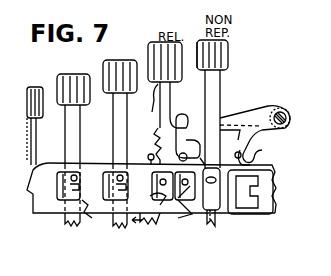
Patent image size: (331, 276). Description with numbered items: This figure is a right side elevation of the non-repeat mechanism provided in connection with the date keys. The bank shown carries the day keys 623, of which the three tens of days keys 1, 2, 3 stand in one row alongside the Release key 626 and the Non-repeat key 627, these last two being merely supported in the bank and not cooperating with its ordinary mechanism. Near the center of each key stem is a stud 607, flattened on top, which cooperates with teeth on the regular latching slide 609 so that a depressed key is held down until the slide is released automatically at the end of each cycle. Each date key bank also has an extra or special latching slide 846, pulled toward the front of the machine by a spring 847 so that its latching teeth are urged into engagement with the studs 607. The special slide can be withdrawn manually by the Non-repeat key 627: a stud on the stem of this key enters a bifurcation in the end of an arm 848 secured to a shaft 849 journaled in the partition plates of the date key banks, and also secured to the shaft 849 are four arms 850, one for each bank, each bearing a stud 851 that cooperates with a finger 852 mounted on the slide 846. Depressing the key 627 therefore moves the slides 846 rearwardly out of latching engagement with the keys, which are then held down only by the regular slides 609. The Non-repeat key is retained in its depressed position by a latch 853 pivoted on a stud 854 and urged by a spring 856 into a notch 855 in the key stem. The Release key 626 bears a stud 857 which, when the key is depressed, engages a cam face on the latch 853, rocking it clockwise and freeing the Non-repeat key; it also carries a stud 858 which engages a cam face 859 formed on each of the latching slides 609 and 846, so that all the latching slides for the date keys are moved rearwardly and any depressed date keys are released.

The key 1 is at (33, 117).
The key 2 is at (73, 142).
The key 3 is at (120, 137).
The stud 607 is at (120, 176).
The latching slide 609 is at (38, 170).
The day keys 623 is at (65, 77).
The Release key 626 is at (157, 88).
The Non-repeat key 627 is at (228, 50).
The special latching slide 846 is at (84, 220).
The spring 847 is at (142, 226).
The arm 848 is at (236, 118).
The shaft 849 is at (292, 114).
The arms 850 is at (258, 147).
The stud 851 is at (259, 161).
The finger 852 is at (276, 176).
The latch 853 is at (210, 222).
The stud 854 is at (180, 124).
The notch 855 is at (221, 214).
The spring 856 is at (150, 153).
The stud 857 is at (176, 118).
The stud 858 is at (186, 208).
The cam face 859 is at (162, 192).